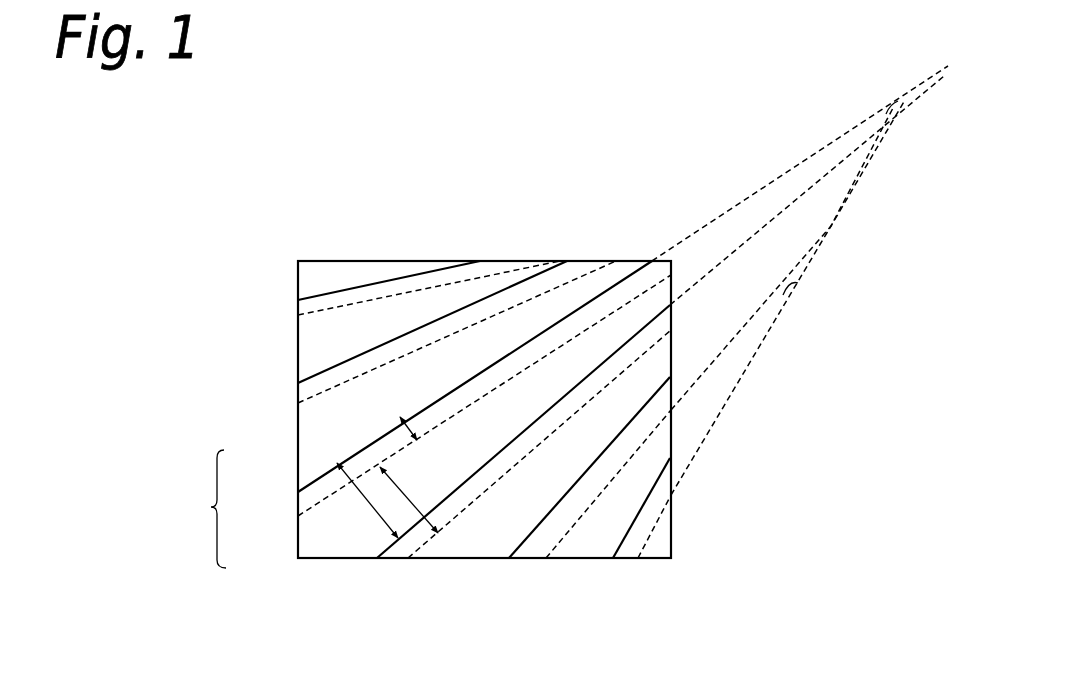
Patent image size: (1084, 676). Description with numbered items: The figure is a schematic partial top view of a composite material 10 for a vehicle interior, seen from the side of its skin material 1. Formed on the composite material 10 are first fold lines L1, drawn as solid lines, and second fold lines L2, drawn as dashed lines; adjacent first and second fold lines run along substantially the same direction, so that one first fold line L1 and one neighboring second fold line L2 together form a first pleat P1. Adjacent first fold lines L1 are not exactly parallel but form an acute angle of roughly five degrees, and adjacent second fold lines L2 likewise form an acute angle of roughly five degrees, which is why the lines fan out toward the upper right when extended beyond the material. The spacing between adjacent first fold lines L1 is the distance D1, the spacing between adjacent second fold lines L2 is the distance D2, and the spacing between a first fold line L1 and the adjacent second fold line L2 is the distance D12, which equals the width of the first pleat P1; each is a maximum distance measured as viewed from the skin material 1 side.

The skin material 1 is at (318, 343).
The composite material 10 is at (610, 216).
The first fold lines L1 is at (353, 451).
The second fold lines L2 is at (328, 503).
The first pleat P1 is at (207, 509).
The distance between adjacent first fold lines D1 is at (378, 507).
The distance between adjacent second fold lines D2 is at (415, 502).
The distance between adjacent first and second fold lines D12 is at (410, 426).